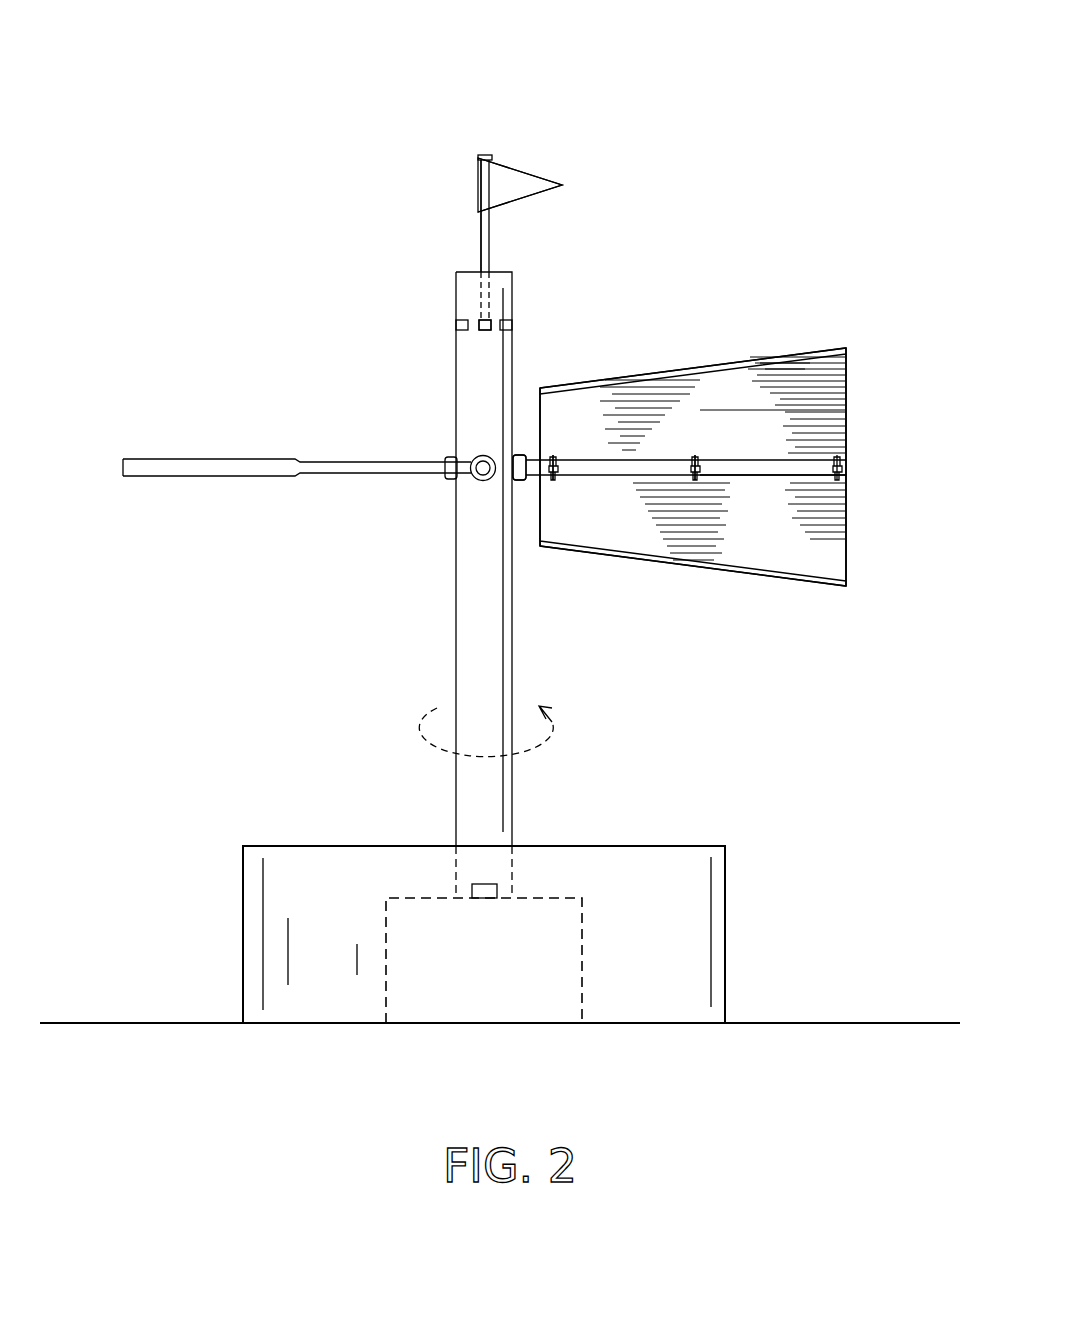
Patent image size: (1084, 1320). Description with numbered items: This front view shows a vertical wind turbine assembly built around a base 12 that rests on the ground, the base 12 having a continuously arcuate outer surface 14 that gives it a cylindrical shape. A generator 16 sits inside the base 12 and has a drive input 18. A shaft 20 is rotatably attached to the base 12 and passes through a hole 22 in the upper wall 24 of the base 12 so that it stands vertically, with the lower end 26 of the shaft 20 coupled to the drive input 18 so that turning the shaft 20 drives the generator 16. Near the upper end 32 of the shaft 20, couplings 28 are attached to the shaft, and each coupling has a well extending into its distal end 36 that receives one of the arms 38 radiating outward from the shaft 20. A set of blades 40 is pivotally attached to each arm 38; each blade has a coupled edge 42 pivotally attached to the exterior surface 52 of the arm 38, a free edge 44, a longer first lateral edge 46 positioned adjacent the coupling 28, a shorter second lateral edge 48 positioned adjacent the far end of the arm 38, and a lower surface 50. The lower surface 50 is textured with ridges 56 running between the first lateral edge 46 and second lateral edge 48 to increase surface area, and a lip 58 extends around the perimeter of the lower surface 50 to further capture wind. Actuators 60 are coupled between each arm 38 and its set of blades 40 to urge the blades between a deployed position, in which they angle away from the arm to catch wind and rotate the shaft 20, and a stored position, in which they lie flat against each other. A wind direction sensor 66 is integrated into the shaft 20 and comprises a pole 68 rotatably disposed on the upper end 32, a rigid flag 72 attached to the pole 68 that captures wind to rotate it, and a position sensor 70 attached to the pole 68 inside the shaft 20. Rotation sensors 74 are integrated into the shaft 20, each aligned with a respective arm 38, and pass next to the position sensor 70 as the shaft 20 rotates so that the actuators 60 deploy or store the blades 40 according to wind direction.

The base 12 is at (725, 846).
The outer surface 14 is at (290, 910).
The generator 16 is at (386, 898).
The drive input 18 is at (497, 884).
The shaft 20 is at (456, 590).
The hole 22 is at (483, 878).
The upper wall 24 is at (668, 846).
The lower end 26 is at (506, 900).
The couplings 28 is at (518, 455).
The upper end 32 is at (456, 272).
The distal end 36 is at (526, 468).
The arms 38 is at (777, 478).
The sets of blades 40 is at (850, 343).
The coupled edge 42 is at (818, 462).
The free edge 44 is at (730, 365).
The first lateral edge 46 is at (540, 520).
The second lateral edge 48 is at (838, 534).
The lower surface 50 is at (735, 420).
The exterior surface 52 is at (848, 470).
The ridges 56 is at (803, 385).
The lip 58 is at (810, 578).
The actuators 60 is at (553, 482).
The wind direction sensor 66 is at (512, 162).
The pole 68 is at (480, 238).
The position sensor 70 is at (485, 330).
The flag 72 is at (550, 182).
The rotation sensors 74 is at (456, 322).